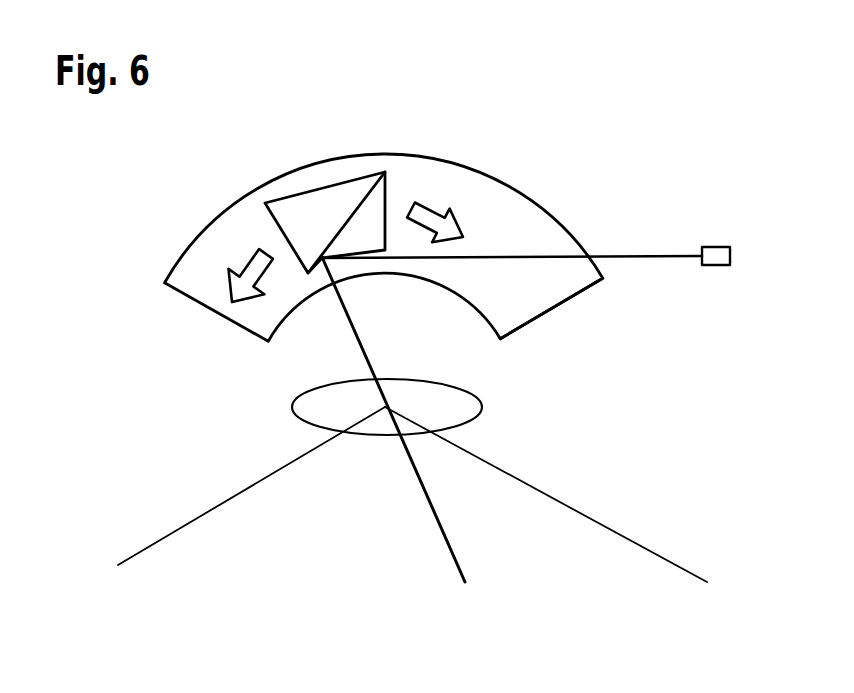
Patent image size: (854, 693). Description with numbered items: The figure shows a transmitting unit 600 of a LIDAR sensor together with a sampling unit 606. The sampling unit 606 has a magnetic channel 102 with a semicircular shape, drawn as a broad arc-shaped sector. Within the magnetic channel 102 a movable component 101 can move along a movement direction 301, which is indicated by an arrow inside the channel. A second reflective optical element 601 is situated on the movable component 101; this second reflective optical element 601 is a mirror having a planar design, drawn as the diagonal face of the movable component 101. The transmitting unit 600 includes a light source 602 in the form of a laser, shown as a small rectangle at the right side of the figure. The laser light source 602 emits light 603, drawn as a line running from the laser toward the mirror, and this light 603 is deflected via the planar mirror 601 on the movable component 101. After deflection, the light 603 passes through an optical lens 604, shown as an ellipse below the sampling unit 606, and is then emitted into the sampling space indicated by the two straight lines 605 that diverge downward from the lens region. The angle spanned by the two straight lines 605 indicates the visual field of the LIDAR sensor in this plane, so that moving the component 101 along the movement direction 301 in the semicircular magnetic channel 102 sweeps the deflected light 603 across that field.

The transmitting unit 600 is at (165, 197).
The sampling unit 606 is at (187, 243).
The movable component 101 is at (295, 205).
The second reflective optical element 601 is at (350, 202).
The movement direction 301 is at (427, 220).
The magnetic channel 102 is at (538, 242).
The light 603 is at (638, 256).
The light source 602 is at (717, 247).
The optical lens 604 is at (482, 405).
The straight lines 605 is at (182, 527).